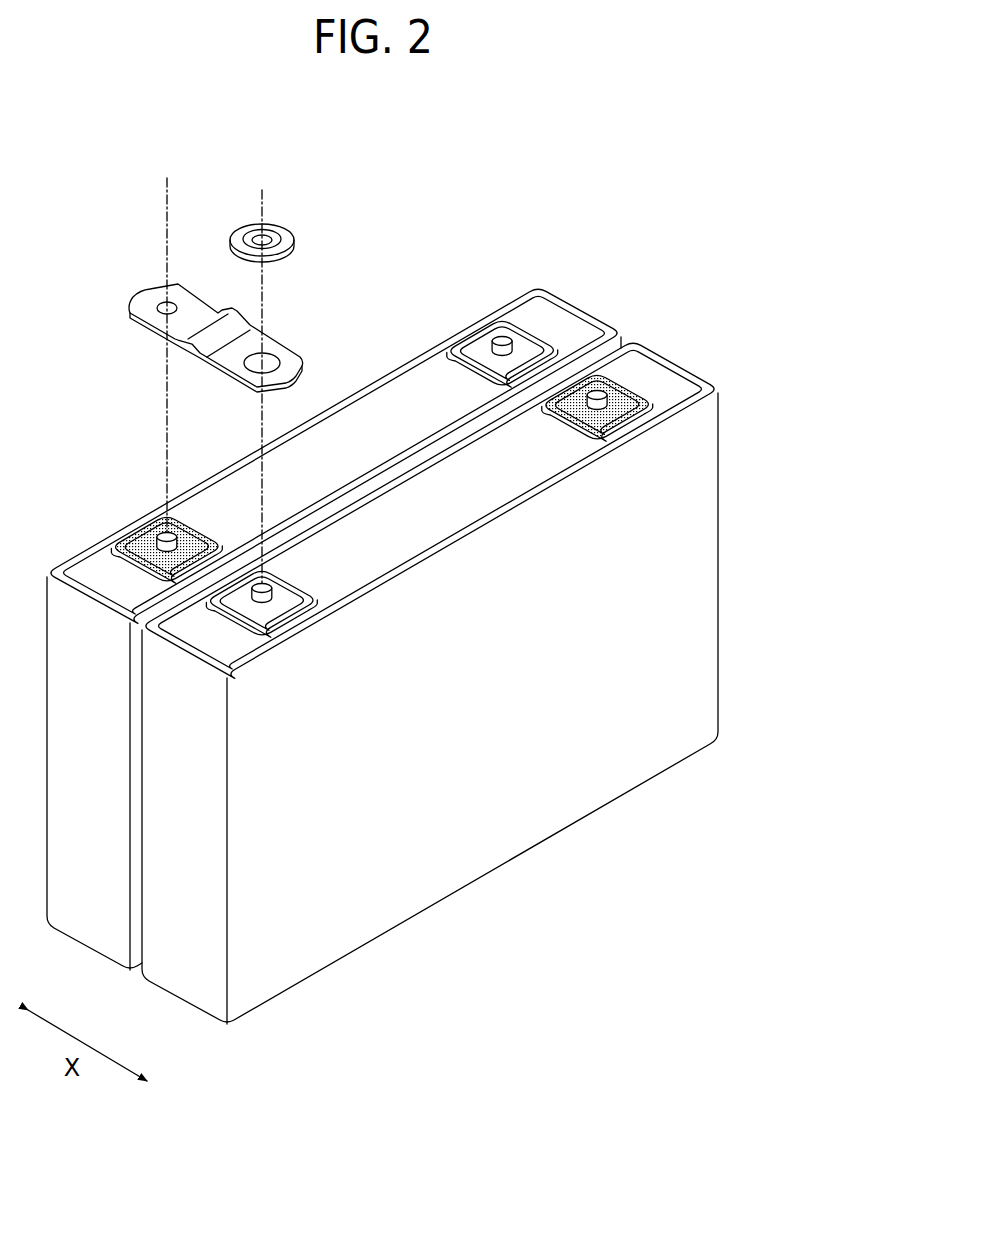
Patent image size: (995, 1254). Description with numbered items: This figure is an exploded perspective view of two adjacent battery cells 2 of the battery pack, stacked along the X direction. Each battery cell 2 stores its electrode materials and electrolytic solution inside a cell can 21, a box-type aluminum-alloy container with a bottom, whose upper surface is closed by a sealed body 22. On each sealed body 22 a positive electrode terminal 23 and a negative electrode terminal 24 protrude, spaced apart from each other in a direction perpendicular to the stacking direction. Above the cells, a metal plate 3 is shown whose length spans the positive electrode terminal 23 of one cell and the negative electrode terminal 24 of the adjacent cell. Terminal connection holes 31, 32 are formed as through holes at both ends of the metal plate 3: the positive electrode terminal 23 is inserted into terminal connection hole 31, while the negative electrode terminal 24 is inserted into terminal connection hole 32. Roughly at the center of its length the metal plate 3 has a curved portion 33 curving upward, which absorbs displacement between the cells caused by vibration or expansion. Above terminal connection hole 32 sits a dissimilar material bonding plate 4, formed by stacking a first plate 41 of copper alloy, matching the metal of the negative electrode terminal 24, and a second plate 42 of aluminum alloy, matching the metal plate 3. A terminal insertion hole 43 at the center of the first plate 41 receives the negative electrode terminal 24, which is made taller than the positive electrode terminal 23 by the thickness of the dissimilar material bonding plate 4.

The battery cell 2 is at (623, 253).
The cell can 21 is at (90, 935).
The sealed body 22 is at (572, 316).
The positive electrode terminal 23 is at (140, 537).
The negative electrode terminal 24 is at (506, 333).
The metal plate 3 is at (110, 292).
The terminal connection hole 31 is at (166, 302).
The terminal connection hole 32 is at (276, 356).
The curved portion 33 is at (230, 313).
The dissimilar material bonding plate 4 is at (297, 231).
The first plate 41 is at (250, 228).
The second plate 42 is at (294, 241).
The terminal insertion hole 43 is at (274, 229).